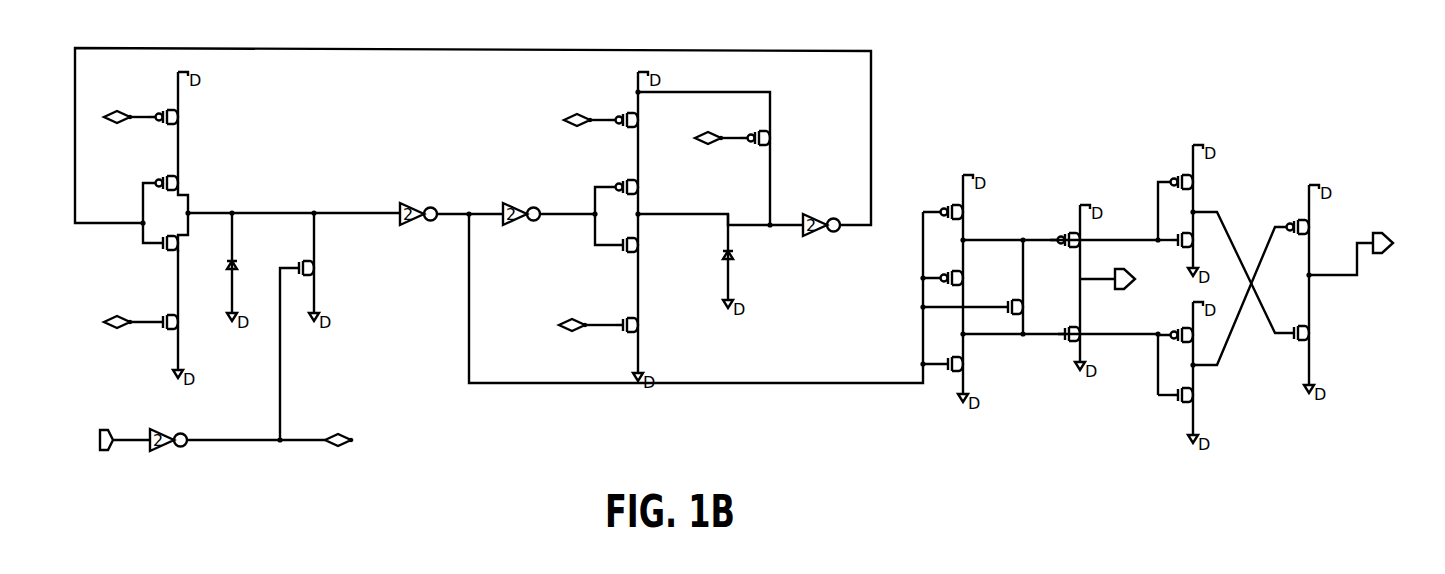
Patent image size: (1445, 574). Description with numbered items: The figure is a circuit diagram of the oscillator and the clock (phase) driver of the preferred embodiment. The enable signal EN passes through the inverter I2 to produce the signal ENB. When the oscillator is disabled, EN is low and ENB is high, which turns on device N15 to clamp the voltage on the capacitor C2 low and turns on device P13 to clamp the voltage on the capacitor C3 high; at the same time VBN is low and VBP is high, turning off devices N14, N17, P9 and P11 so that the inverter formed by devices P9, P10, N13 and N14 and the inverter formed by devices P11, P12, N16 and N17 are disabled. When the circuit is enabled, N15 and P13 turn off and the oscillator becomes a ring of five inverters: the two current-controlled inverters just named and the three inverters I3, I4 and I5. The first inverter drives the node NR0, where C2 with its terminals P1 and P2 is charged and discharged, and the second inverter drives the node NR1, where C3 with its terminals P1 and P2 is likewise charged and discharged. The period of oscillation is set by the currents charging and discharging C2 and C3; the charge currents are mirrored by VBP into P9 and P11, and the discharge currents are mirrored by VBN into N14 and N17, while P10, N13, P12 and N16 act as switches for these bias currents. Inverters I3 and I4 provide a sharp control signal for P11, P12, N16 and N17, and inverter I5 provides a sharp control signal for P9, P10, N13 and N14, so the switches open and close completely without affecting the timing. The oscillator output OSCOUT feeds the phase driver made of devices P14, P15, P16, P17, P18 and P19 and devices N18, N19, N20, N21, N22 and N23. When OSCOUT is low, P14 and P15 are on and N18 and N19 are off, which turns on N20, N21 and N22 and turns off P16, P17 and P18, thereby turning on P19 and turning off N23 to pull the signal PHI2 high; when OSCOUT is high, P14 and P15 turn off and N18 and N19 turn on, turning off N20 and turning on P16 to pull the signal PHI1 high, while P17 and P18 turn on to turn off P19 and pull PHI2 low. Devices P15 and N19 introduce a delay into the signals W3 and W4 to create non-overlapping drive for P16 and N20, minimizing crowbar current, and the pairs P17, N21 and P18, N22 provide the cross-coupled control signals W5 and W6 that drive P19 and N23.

The device P9 is at (174, 110).
The device P10 is at (161, 198).
The device N13 is at (171, 201).
The device N14 is at (162, 319).
The device N15 is at (303, 326).
The VBP signal VBP is at (125, 106).
The VBN signal VBN is at (356, 209).
The node NR0 is at (294, 200).
The capacitor C2 is at (244, 272).
The capacitor terminal P1 is at (463, 278).
The capacitor terminal P2 is at (463, 245).
The EN signal EN is at (404, 278).
The ENB signal ENB is at (270, 431).
The inverter I2 is at (168, 449).
The inverter I3 is at (451, 203).
The inverter I4 is at (550, 203).
The inverter I5 is at (821, 213).
The oscillator output OSCOUT is at (697, 297).
The device P11 is at (630, 135).
The device P12 is at (617, 174).
The device N16 is at (616, 256).
The device N17 is at (629, 339).
The device P13 is at (705, 160).
The node NR1 is at (719, 206).
The capacitor C3 is at (742, 266).
The device P14 is at (954, 207).
The device P15 is at (943, 287).
The device N18 is at (951, 372).
The device N19 is at (973, 287).
The signal W3 is at (1060, 227).
The signal W4 is at (1060, 322).
The device P16 is at (1073, 270).
The device N20 is at (1069, 342).
The signal PH1 PHI1 is at (1129, 280).
The device P17 is at (1183, 206).
The device N21 is at (1184, 244).
The device P18 is at (1183, 368).
The device N22 is at (1184, 406).
The signal W5 is at (1239, 285).
The signal W6 is at (1244, 284).
The device P19 is at (1304, 284).
The device N23 is at (1299, 354).
The signal PH2 PHI2 is at (1371, 255).